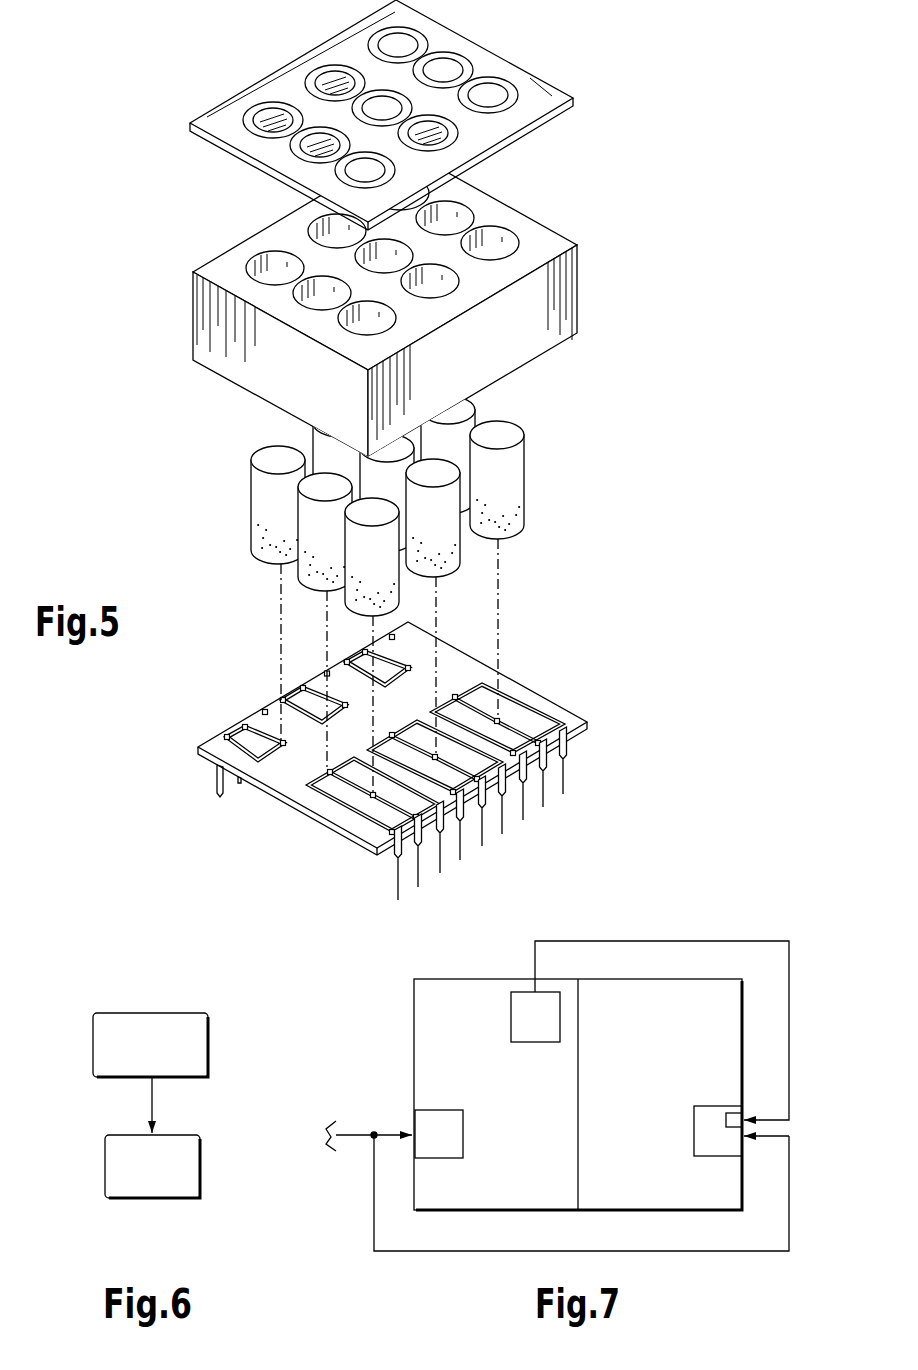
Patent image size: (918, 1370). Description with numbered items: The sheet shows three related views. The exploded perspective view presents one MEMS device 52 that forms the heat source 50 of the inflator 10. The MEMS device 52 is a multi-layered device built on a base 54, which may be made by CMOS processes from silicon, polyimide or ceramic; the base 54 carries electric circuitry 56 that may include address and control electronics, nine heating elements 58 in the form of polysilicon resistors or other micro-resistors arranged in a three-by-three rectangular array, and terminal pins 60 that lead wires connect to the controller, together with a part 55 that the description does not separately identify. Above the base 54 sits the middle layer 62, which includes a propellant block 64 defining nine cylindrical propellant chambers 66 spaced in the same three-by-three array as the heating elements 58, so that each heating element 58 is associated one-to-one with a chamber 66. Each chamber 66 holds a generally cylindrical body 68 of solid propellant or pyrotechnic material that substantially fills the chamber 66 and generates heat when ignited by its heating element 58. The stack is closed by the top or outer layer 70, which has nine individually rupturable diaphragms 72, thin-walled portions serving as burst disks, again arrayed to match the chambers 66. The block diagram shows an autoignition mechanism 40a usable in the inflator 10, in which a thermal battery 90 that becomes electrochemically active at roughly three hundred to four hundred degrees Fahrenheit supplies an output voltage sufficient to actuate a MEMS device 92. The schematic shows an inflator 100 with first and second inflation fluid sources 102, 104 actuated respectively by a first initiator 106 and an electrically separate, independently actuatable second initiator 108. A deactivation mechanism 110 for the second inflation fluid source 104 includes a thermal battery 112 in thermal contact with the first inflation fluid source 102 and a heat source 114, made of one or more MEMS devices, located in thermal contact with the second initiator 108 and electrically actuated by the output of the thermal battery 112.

In FIG. 5, the inflator 10 is at (133, 512).
In FIG. 5, the heat source 50 is at (150, 466).
In FIG. 5, the MEMS device 52 is at (185, 423).
In FIG. 5, the base 54 is at (247, 829).
In FIG. 5, the substrate 55 is at (379, 763).
In FIG. 5, the electric circuitry 56 is at (502, 677).
In FIG. 5, the heating elements 58 is at (375, 797).
In FIG. 5, the terminal pins 60 is at (216, 781).
In FIG. 5, the middle layer 62 is at (562, 408).
In FIG. 5, the propellant block 64 is at (401, 302).
In FIG. 5, the propellant chambers 66 is at (500, 243).
In FIG. 5, the propellant bodies 68 is at (313, 547).
In FIG. 5, the outer layer 70 is at (430, 115).
In FIG. 5, the diaphragms 72 is at (493, 95).
In FIG. 6, the thermal battery 90 is at (200, 1018).
In FIG. 6, the MEMS device 92 is at (192, 1152).
In FIG. 6, the autoignition mechanism 40a is at (90, 1113).
In FIG. 7, the inflator 100 is at (450, 1273).
In FIG. 7, the first inflation fluid source 102 is at (458, 1029).
In FIG. 7, the second inflation fluid source 104 is at (642, 1011).
In FIG. 7, the first initiator 106 is at (442, 1108).
In FIG. 7, the second initiator 108 is at (715, 1154).
In FIG. 7, the deactivation mechanism 110 is at (762, 927).
In FIG. 7, the thermal battery 112 is at (530, 1015).
In FIG. 7, the heat source 114 is at (740, 1111).